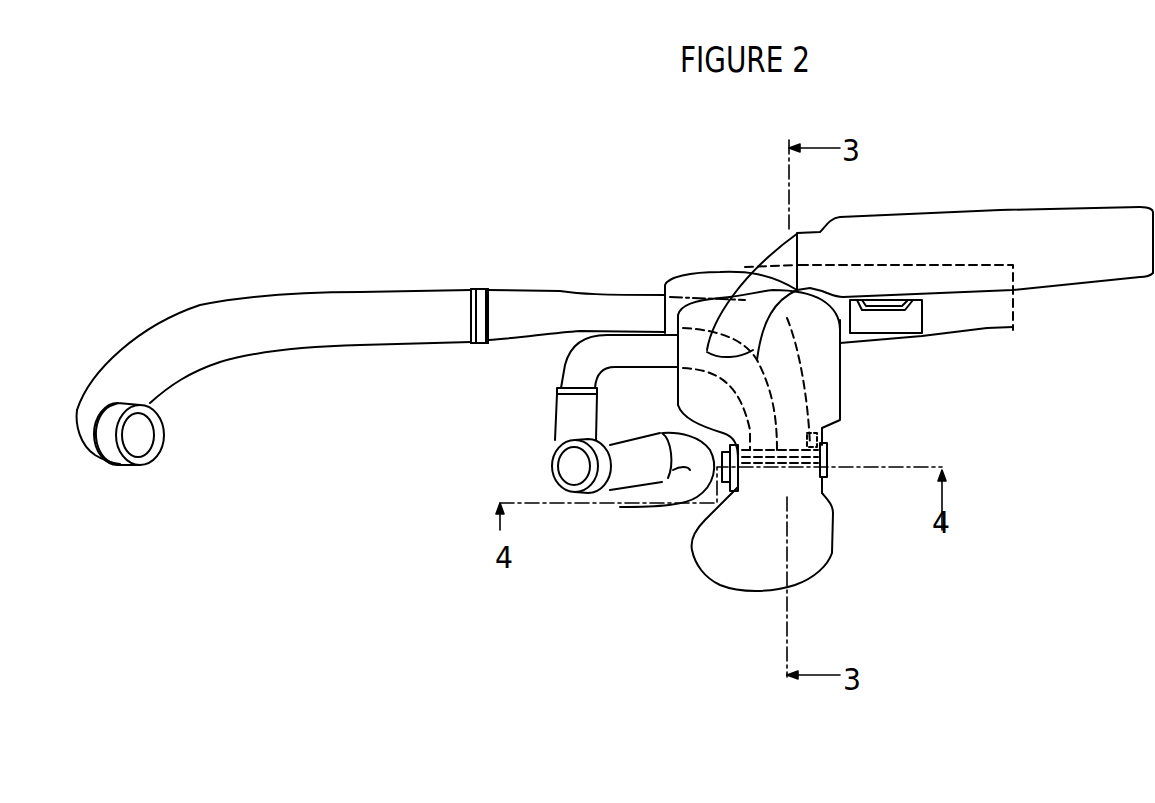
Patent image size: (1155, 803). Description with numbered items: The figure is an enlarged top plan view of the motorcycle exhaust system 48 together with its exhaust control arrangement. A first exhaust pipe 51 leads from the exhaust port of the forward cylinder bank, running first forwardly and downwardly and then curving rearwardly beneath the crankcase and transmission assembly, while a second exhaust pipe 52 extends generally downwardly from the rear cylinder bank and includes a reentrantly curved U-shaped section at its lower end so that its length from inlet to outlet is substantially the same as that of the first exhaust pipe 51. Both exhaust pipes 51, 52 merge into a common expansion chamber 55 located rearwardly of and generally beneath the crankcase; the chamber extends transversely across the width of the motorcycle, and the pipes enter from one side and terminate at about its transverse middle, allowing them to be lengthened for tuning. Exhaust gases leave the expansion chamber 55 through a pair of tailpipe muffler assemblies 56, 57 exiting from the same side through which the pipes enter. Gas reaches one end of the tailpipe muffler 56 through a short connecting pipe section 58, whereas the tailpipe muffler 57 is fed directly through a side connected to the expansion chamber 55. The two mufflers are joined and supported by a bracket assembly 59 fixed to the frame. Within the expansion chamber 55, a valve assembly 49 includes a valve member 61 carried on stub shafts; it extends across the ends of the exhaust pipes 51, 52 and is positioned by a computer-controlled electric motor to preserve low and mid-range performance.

The exhaust system 48 is at (420, 358).
The valve assembly 49 is at (848, 447).
The first exhaust pipe 51 is at (293, 292).
The second exhaust pipe 52 is at (553, 416).
The expansion chamber 55 is at (760, 592).
The tailpipe muffler 56 is at (1085, 206).
The tailpipe muffler 57 is at (1007, 330).
The connecting pipe section 58 is at (757, 253).
The bracket assembly 59 is at (923, 325).
The valve member 61 is at (830, 423).